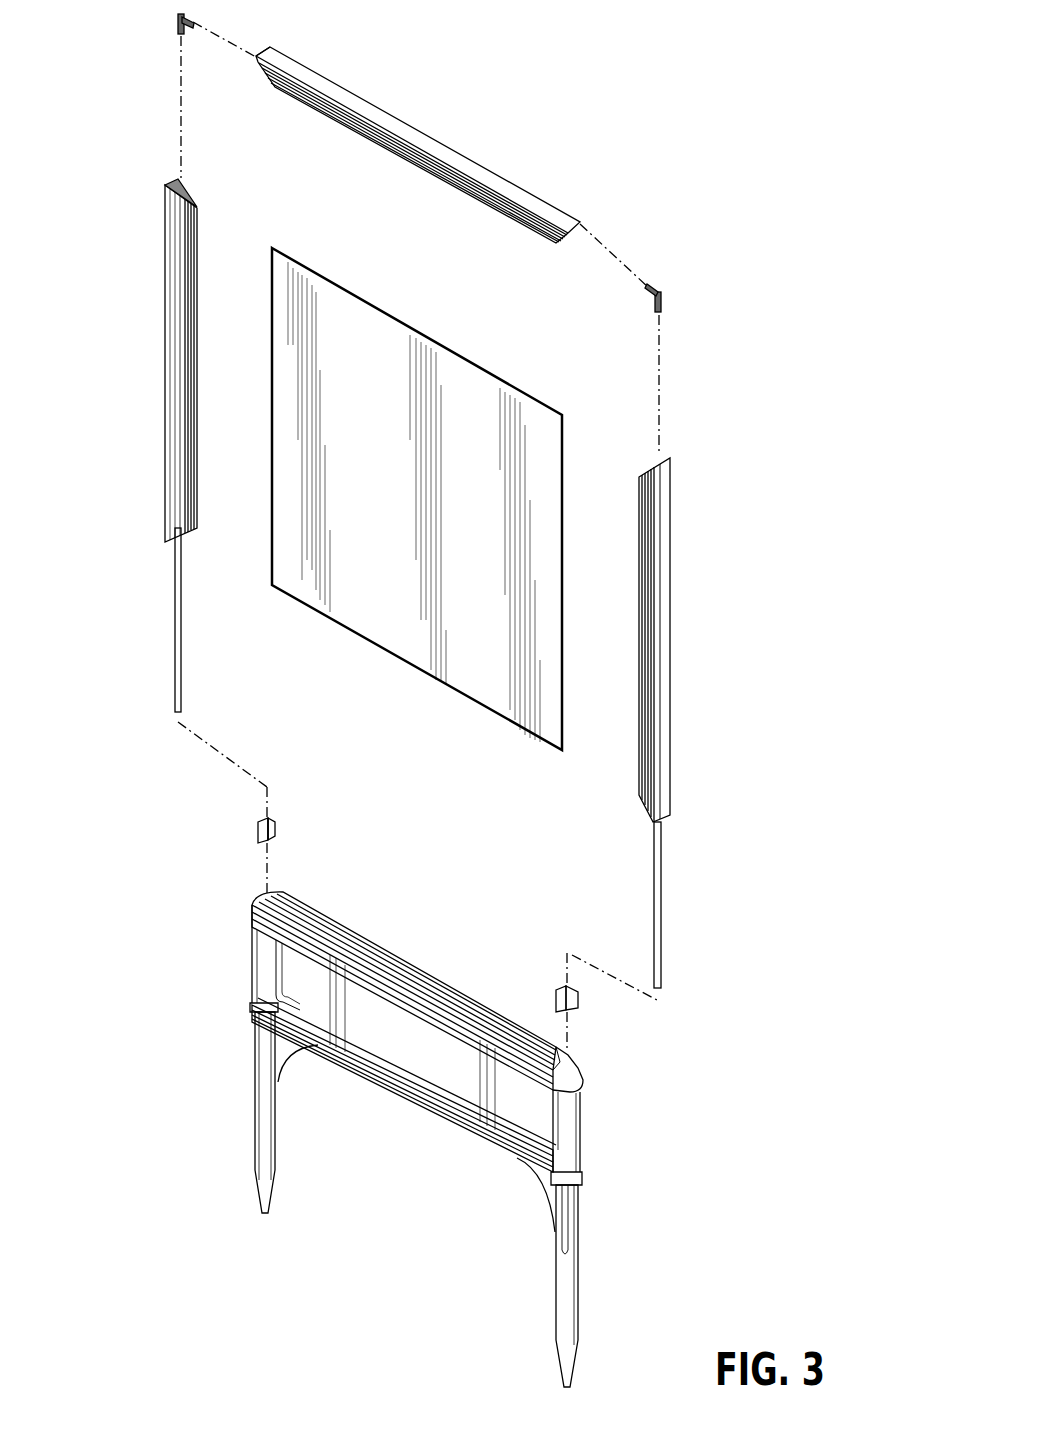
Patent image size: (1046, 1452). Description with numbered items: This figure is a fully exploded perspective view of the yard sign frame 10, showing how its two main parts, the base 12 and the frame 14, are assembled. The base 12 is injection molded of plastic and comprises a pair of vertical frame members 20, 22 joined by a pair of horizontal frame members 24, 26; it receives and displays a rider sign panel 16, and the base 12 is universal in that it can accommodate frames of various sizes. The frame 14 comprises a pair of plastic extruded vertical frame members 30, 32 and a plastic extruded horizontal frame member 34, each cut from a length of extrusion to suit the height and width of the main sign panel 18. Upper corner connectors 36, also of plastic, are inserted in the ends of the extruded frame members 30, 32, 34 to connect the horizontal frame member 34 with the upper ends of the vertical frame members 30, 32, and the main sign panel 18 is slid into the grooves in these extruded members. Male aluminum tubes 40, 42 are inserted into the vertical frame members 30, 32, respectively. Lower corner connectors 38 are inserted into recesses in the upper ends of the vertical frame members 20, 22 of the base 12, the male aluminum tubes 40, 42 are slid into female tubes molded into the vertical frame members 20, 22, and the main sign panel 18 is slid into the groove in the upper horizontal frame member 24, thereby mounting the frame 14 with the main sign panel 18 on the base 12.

The yard sign frame 10 is at (750, 125).
The base 12 is at (608, 1151).
The frame 14 is at (708, 564).
The rider sign panel 16 is at (416, 1062).
The main sign panel 18 is at (400, 512).
The vertical frame member 20 is at (578, 1290).
The vertical frame member 22 is at (255, 1127).
The upper horizontal frame member 24 is at (398, 952).
The horizontal frame member 26 is at (424, 1056).
The vertical frame member 30 is at (666, 688).
The vertical frame member 32 is at (165, 352).
The horizontal frame member 34 is at (432, 148).
The upper corner connectors 36 is at (176, 30).
The lower corner connectors 38 is at (258, 832).
The male aluminum tube 40 is at (661, 890).
The male aluminum tube 42 is at (181, 630).